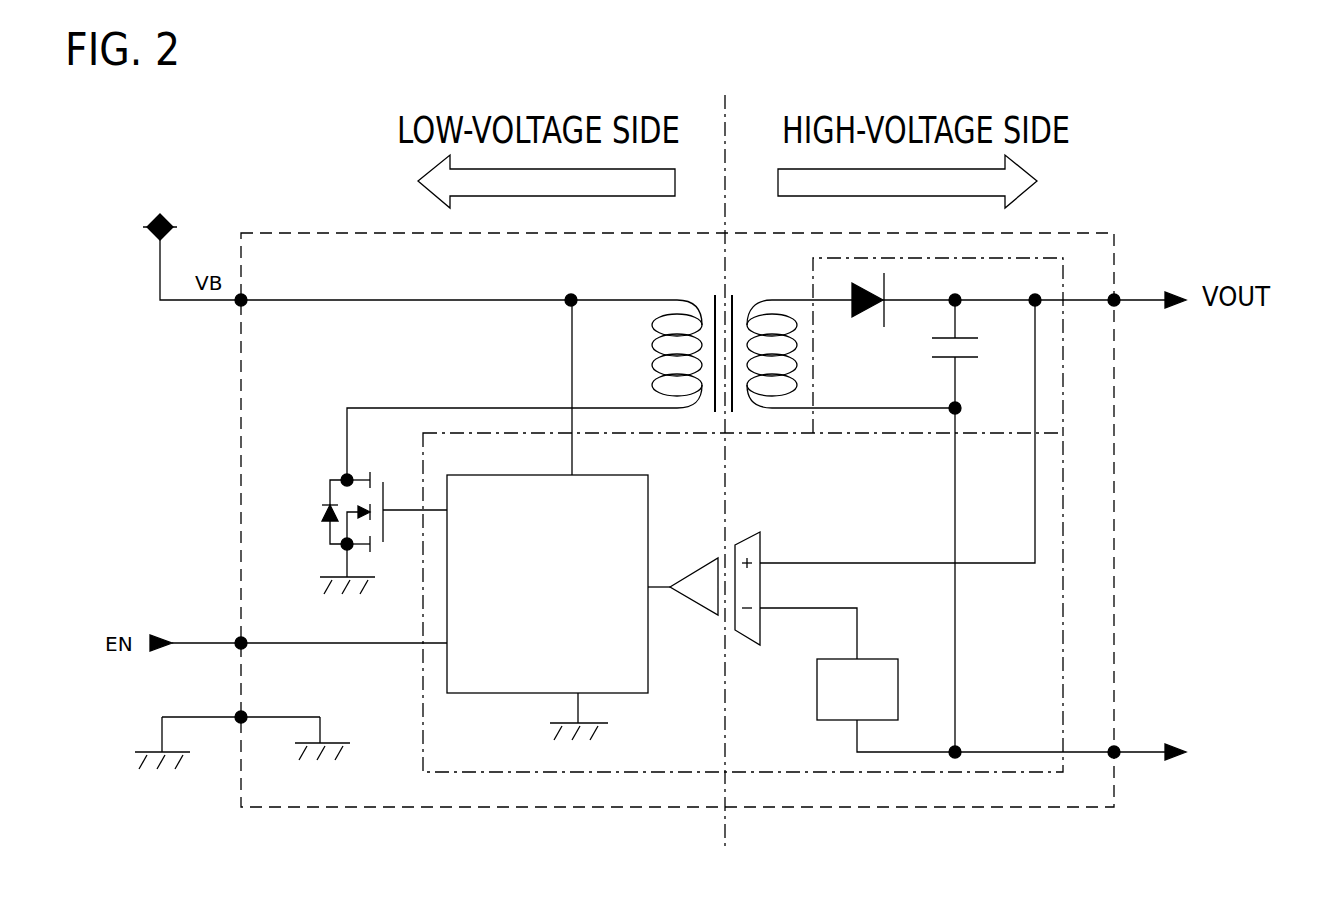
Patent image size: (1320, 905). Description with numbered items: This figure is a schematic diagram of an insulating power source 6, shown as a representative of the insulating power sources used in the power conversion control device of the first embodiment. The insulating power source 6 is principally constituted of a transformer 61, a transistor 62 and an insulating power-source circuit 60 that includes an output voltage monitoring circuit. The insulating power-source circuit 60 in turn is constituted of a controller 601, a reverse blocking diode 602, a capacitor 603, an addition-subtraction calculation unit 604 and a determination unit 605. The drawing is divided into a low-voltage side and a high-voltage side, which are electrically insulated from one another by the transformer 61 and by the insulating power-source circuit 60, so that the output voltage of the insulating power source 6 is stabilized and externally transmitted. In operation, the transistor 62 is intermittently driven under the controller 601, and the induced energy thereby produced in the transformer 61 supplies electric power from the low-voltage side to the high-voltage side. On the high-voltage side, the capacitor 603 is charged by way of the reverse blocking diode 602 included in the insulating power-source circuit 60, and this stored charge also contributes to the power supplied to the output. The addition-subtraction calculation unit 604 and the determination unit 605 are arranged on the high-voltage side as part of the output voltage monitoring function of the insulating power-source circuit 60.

The insulating power source 6 is at (270, 808).
The insulating power-source circuit 60 is at (423, 697).
The transformer 61 is at (708, 299).
The transistor 62 is at (316, 540).
The controller 601 is at (651, 488).
The reverse blocking diode 602 is at (862, 320).
The capacitor 603 is at (970, 362).
The addition-subtraction calculation unit 604 is at (762, 545).
The determination unit 605 is at (880, 659).